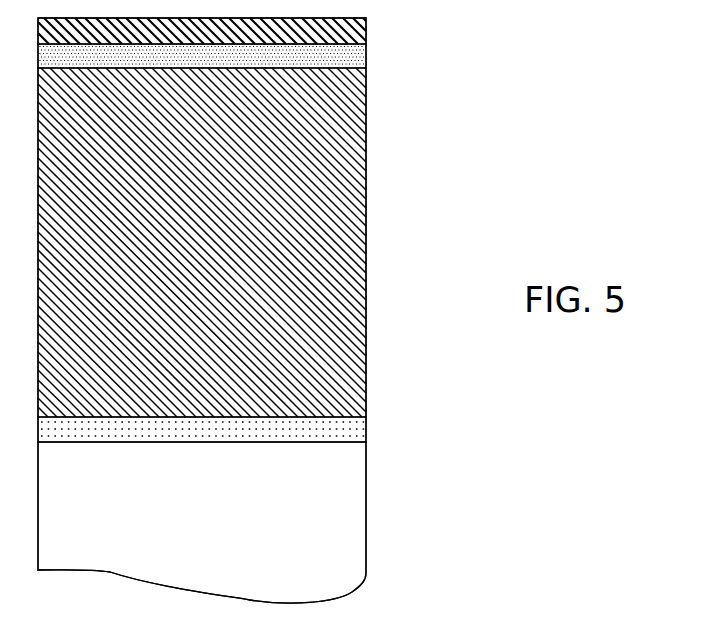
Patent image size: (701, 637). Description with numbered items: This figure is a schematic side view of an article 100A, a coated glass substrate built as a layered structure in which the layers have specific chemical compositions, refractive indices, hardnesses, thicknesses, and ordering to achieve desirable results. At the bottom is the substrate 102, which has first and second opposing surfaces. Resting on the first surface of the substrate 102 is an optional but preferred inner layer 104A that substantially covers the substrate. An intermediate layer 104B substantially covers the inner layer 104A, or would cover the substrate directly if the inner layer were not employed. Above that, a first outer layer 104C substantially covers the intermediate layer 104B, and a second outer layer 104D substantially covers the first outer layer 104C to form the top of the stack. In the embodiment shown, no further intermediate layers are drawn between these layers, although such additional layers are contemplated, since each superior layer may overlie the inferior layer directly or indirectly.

The article 100A is at (597, 358).
The substrate 102 is at (425, 442).
The inner layer 104A is at (448, 418).
The intermediate layer 104B is at (425, 68).
The first outer layer 104C is at (448, 45).
The second outer layer 104D is at (425, 20).